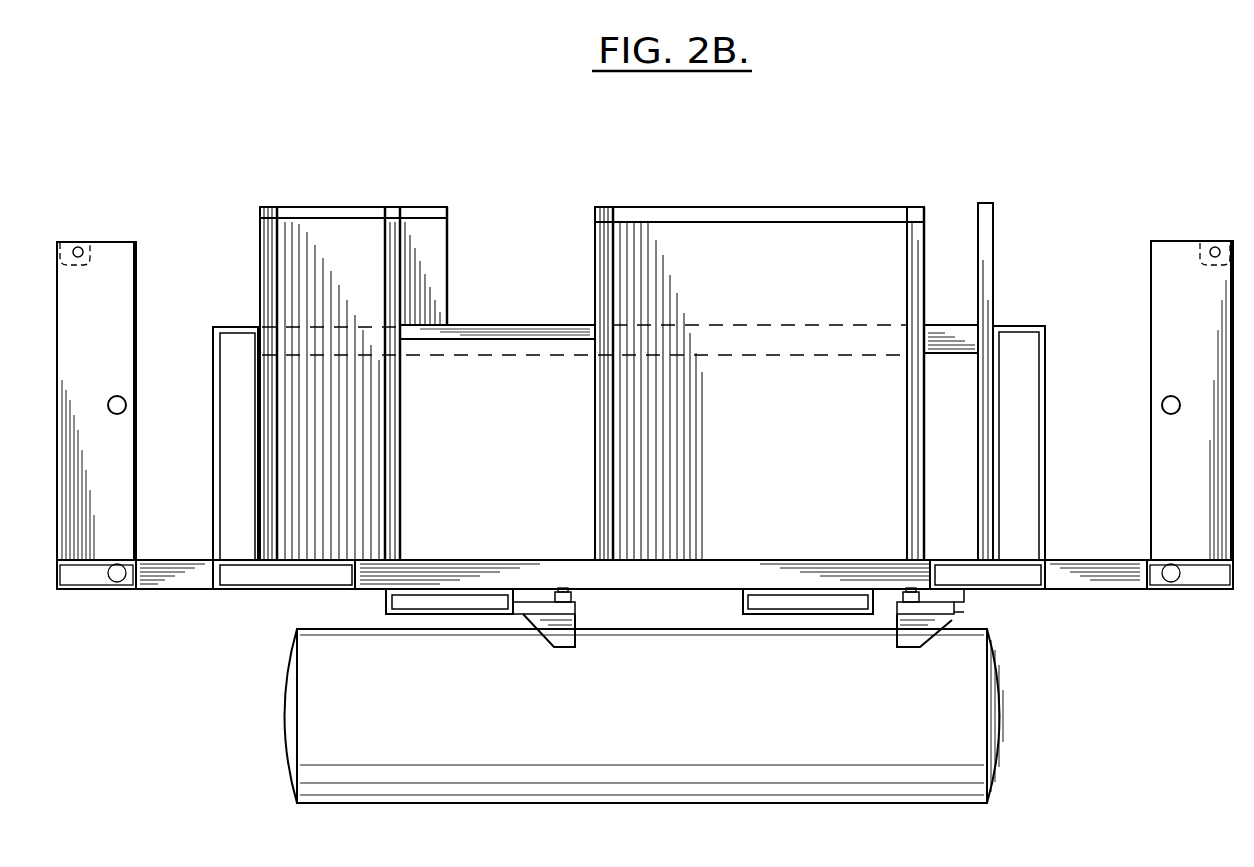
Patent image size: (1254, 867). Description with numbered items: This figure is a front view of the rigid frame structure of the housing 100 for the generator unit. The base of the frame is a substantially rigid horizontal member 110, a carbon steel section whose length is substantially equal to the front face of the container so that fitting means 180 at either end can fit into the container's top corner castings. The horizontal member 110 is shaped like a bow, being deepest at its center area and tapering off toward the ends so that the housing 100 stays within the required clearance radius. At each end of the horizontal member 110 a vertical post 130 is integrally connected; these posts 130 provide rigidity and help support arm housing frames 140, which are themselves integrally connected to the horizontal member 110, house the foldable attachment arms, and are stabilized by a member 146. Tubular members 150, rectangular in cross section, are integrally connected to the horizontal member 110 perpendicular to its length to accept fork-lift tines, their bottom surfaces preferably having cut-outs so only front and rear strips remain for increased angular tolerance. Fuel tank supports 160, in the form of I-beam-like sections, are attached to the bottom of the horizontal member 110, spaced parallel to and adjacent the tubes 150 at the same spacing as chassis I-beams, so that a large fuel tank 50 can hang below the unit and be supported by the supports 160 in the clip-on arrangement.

The fuel tank 50 is at (1012, 710).
The housing 100 is at (1094, 617).
The horizontal member 110 is at (193, 580).
The vertical posts 130 is at (138, 262).
The arm housing frames 140 is at (213, 365).
The stabilizing member 146 is at (946, 325).
The tubular members 150 is at (432, 600).
The fuel tank supports 160 is at (518, 616).
The fitting means 180 is at (73, 241).